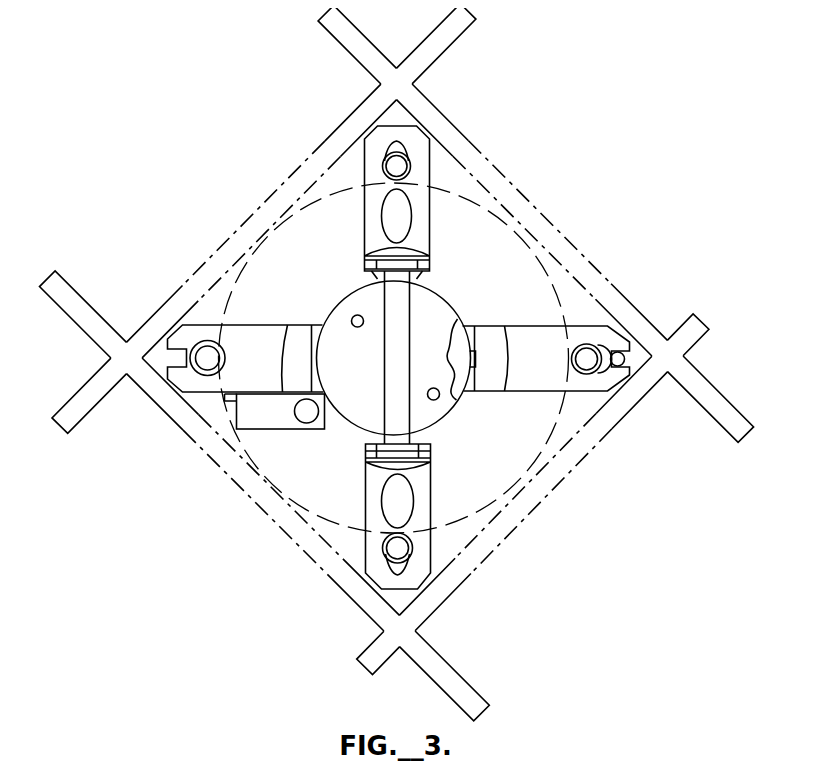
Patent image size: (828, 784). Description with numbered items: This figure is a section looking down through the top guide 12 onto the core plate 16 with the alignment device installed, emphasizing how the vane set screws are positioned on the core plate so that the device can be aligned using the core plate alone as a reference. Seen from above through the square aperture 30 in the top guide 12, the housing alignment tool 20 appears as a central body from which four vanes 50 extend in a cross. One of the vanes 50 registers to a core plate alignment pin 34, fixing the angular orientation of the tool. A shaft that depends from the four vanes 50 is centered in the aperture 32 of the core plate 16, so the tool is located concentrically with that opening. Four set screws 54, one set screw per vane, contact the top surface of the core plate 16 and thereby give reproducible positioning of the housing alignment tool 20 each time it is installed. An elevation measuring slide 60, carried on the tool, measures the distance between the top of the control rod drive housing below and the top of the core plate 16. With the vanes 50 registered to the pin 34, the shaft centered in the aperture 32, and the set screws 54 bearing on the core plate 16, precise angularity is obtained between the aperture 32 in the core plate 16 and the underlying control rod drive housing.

The top guide 12 is at (458, 34).
The core plate 16 is at (593, 412).
The housing alignment tool 20 is at (441, 288).
The square aperture 30 is at (401, 112).
The aperture 32 is at (503, 458).
The core plate alignment pin 34 is at (645, 323).
The vanes 50 is at (529, 367).
The set screws 54 is at (382, 553).
The elevation measuring slide 60 is at (258, 462).